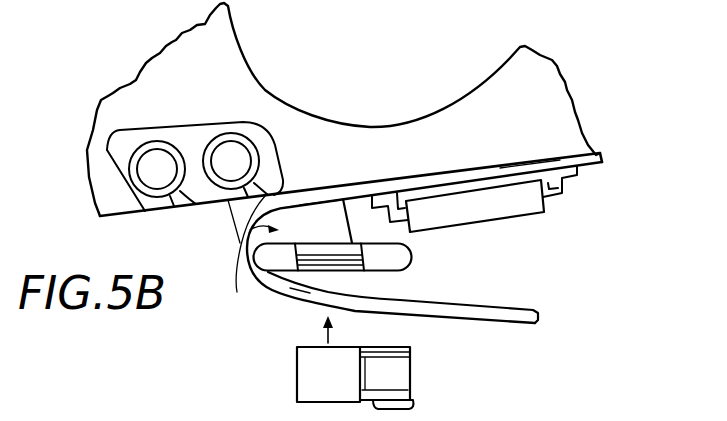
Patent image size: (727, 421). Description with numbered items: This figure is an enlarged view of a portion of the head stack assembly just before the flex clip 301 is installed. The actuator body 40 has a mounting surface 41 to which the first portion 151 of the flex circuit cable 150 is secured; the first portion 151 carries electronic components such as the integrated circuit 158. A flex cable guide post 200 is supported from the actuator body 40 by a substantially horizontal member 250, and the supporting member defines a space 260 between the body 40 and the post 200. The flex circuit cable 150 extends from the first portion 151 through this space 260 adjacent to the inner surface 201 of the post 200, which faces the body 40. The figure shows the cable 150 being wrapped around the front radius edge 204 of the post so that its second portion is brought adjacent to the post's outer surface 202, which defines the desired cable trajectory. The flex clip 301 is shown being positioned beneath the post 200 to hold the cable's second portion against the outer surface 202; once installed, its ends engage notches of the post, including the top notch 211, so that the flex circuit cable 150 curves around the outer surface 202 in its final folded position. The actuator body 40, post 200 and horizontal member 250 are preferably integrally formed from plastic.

The actuator body 40 is at (193, 64).
The mounting surface 41 is at (448, 172).
The flex circuit cable 150 is at (508, 320).
The first portion 151 is at (514, 170).
The integrated circuit 158 is at (522, 210).
The flex cable guide post 200 is at (404, 248).
The inner surface 201 is at (320, 178).
The outer surface 202 is at (386, 272).
The radius edge 204 is at (246, 278).
The top notch 211 is at (300, 268).
The horizontal member 250 is at (237, 222).
The space 260 is at (250, 230).
The flex clip 301 is at (414, 401).